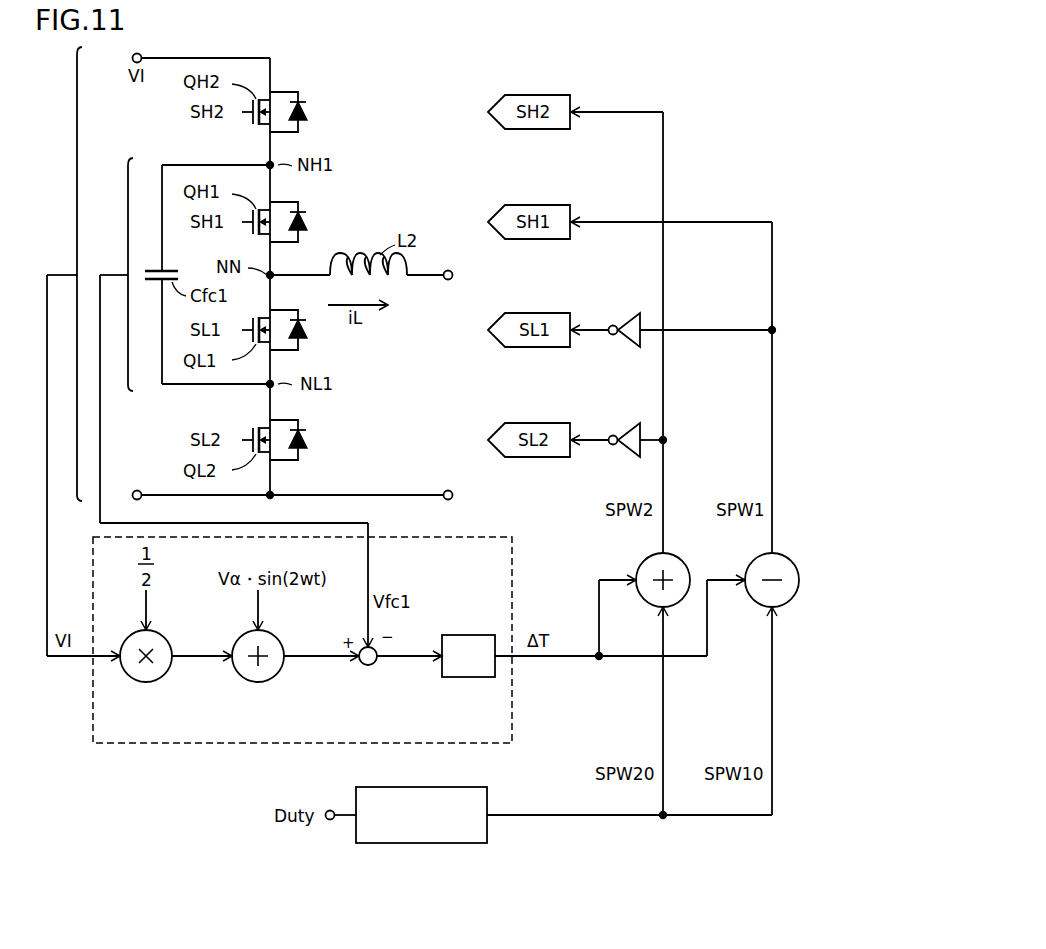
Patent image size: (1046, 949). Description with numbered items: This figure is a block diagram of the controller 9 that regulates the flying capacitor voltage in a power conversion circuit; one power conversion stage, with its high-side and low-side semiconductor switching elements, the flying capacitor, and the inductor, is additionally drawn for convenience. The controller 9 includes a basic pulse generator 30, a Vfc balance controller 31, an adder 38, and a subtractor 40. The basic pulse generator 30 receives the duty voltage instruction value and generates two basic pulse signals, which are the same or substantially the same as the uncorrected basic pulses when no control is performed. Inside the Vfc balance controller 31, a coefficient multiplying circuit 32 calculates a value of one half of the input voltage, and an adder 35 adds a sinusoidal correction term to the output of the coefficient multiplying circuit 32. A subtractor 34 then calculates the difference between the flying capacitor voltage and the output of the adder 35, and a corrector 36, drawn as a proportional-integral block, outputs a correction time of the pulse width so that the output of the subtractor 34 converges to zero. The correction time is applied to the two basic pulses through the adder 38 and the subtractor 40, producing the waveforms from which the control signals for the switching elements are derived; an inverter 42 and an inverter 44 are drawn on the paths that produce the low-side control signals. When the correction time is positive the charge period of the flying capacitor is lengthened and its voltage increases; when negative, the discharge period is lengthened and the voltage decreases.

The controller 9 is at (742, 86).
The basic pulse generator 30 is at (440, 843).
The Vfc balance controller 31 is at (463, 538).
The coefficient multiplying circuit 32 is at (148, 683).
The subtractor 34 is at (368, 666).
The adder 35 is at (260, 683).
The corrector 36 is at (468, 677).
The adder 38 is at (678, 557).
The subtractor 40 is at (787, 557).
The inverter 42 is at (626, 458).
The inverter 44 is at (626, 314).